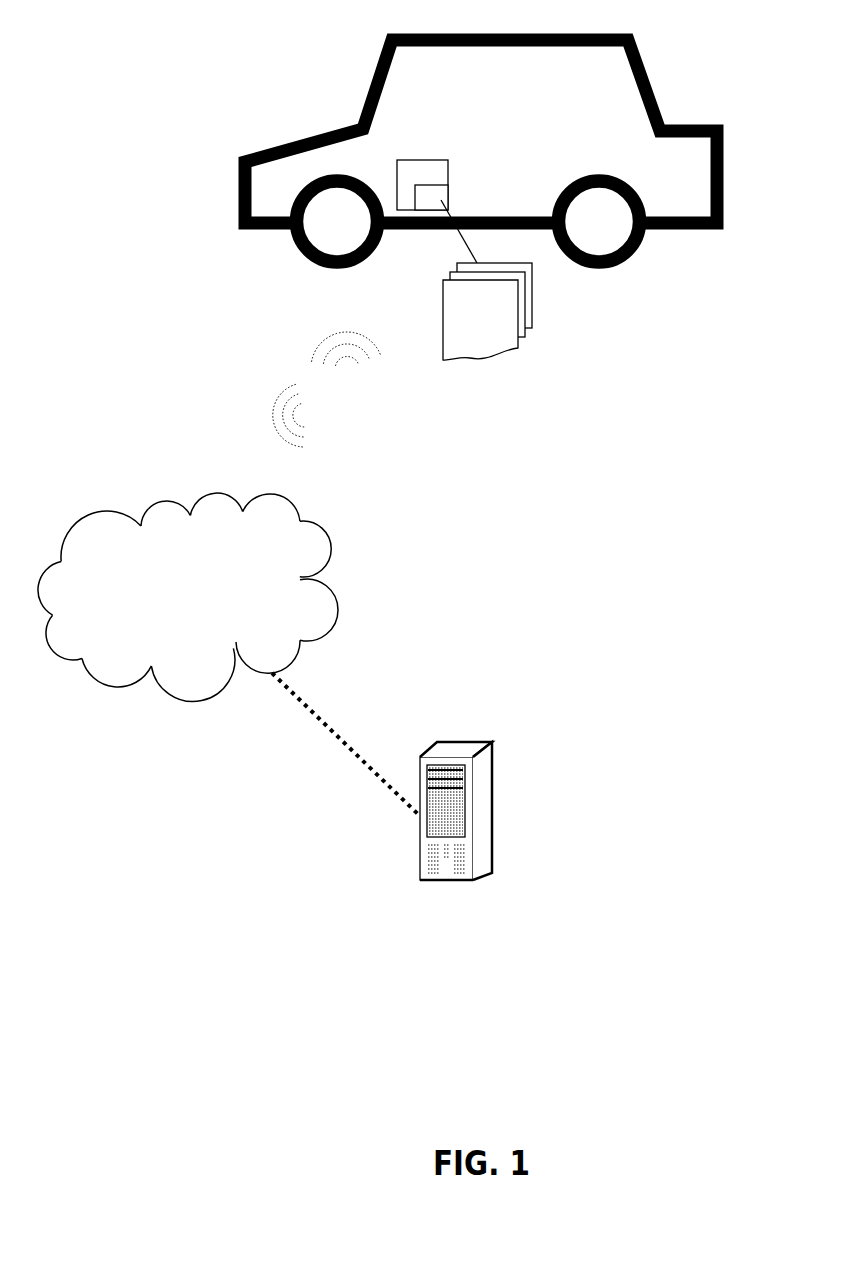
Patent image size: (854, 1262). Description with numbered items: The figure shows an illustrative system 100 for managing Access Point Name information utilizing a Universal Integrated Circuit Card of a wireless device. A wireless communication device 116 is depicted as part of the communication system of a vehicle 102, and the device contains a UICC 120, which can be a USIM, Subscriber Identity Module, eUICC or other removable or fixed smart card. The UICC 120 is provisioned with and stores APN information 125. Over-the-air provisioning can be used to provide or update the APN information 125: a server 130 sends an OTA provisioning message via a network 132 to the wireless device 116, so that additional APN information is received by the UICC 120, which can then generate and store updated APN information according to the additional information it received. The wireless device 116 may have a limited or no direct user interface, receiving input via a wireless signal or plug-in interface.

The system 100 is at (513, 1136).
The vehicle 102 is at (679, 122).
The wireless communication device 116 is at (405, 160).
The UICC 120 is at (440, 198).
The APN information 125 is at (503, 326).
The server 130 is at (453, 742).
The network 132 is at (217, 628).